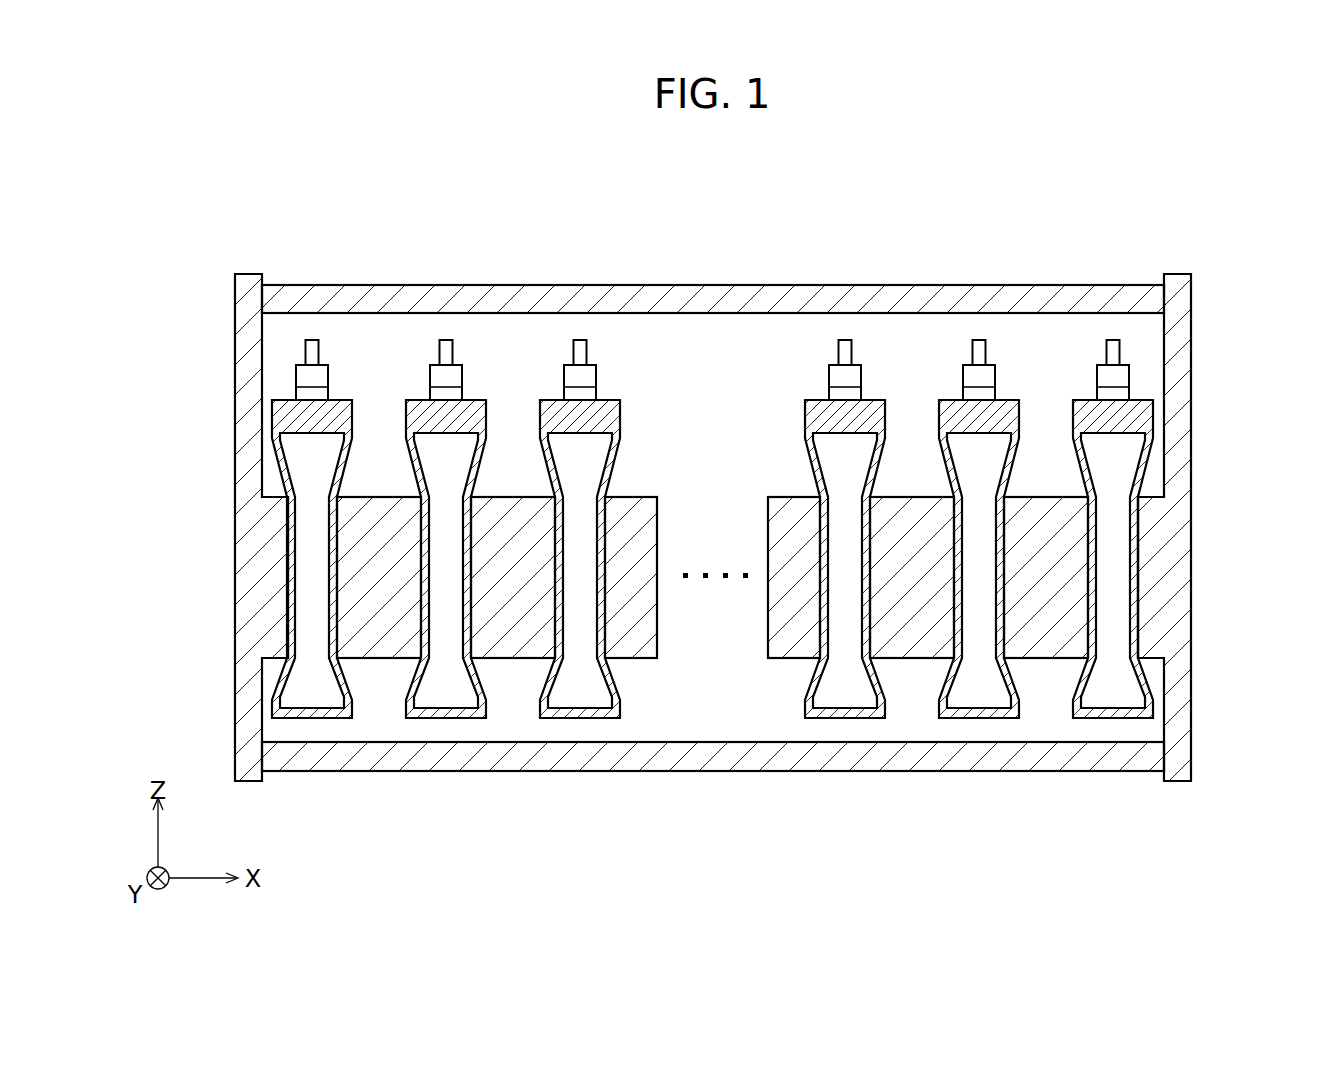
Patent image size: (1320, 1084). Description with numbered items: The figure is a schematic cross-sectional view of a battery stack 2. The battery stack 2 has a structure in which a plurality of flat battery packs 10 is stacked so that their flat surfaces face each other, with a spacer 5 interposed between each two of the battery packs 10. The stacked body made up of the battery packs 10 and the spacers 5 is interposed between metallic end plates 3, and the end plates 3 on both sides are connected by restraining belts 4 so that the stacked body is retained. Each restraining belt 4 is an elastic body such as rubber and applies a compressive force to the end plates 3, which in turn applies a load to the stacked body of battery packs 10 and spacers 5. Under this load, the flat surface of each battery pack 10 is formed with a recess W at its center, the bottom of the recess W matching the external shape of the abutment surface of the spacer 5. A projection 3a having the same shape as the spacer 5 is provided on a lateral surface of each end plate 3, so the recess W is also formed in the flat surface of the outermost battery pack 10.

The battery stack 2 is at (252, 245).
The end plate 3 is at (235, 413).
The projection 3a is at (277, 496).
The restraining belt 4 is at (1123, 285).
The spacer 5 is at (638, 658).
The battery pack 10 is at (330, 350).
The recess W is at (617, 488).